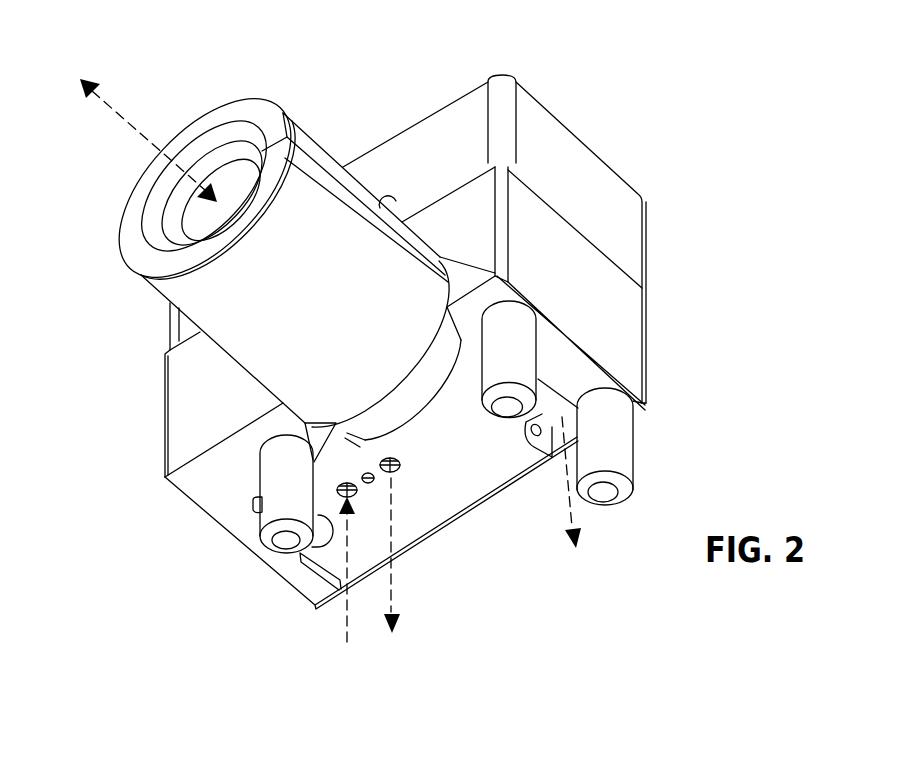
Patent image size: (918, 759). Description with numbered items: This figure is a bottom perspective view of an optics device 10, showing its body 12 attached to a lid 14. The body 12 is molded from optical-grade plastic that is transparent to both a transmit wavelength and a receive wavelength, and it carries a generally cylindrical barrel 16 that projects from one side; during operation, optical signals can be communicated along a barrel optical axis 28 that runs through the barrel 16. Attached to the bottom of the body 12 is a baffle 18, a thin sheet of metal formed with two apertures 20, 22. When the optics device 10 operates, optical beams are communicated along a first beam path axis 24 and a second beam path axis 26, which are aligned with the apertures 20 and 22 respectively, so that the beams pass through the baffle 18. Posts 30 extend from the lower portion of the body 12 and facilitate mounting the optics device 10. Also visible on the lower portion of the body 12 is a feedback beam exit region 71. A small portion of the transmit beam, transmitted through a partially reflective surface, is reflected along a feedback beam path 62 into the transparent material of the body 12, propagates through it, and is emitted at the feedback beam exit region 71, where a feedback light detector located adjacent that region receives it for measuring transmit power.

The optics device 10 is at (414, 351).
The body 12 is at (645, 324).
The lid 14 is at (587, 150).
The barrel 16 is at (147, 280).
The baffle 18 is at (488, 480).
The aperture 20 is at (357, 493).
The aperture 22 is at (400, 463).
The first beam path axis 24 is at (347, 606).
The second beam path axis 26 is at (393, 592).
The barrel optical axis 28 is at (118, 110).
The posts 30 is at (268, 542).
The feedback beam path 62 is at (575, 522).
The feedback beam exit region 71 is at (564, 415).